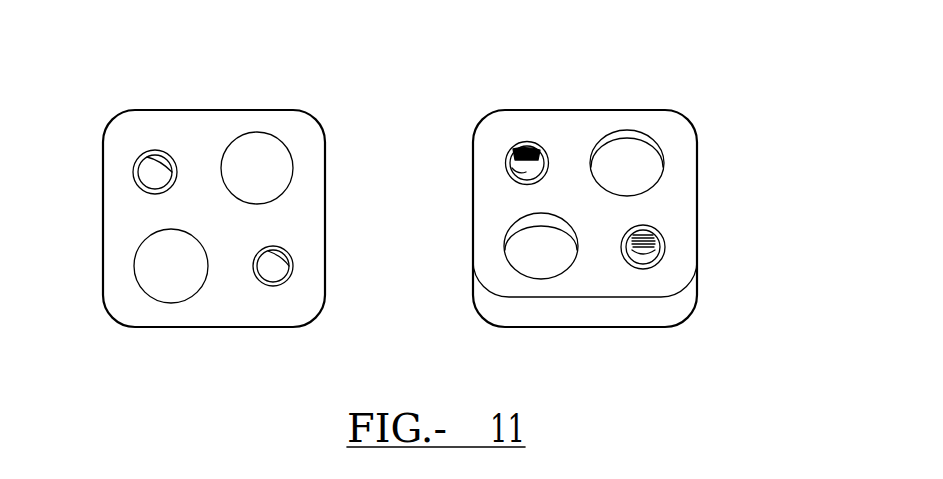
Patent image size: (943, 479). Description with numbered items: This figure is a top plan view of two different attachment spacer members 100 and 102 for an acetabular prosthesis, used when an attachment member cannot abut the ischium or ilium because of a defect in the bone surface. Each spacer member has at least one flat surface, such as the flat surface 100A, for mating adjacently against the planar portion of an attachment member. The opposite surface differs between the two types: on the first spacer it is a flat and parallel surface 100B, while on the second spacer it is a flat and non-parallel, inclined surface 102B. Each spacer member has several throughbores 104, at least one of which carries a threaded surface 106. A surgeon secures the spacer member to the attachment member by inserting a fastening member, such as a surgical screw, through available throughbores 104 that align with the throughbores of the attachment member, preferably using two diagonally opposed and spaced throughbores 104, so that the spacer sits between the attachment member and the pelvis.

The attachment spacer member 100 is at (206, 97).
The flat surface 100A is at (283, 222).
The flat and parallel surface 100B is at (253, 328).
The attachment spacer member 102 is at (571, 90).
The flat and non-parallel surface 102B is at (637, 307).
The throughbore 104 is at (312, 102).
The threaded surface 106 is at (153, 163).